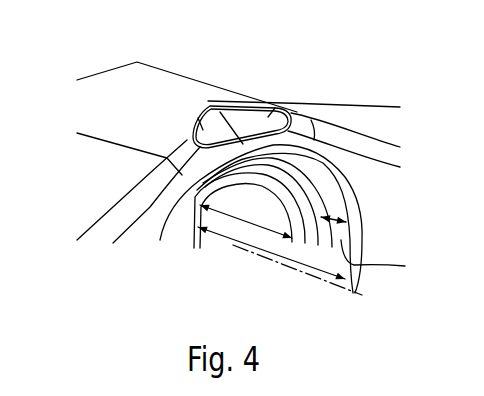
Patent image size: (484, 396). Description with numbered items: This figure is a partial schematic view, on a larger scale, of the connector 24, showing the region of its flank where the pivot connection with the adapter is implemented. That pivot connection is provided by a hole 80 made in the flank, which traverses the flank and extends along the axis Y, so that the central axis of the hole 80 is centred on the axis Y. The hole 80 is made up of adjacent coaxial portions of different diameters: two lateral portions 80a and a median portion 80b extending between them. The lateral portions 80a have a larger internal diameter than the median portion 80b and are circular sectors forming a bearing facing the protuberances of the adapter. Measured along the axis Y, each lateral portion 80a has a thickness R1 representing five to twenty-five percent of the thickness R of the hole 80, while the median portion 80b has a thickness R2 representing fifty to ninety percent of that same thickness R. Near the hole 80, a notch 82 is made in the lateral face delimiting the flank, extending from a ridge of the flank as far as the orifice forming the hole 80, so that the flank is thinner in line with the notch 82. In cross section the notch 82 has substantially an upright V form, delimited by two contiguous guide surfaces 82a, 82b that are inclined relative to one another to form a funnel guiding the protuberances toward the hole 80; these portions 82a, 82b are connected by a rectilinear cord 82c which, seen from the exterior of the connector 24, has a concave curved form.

The connector 24 is at (358, 77).
The notch 82 is at (254, 91).
The guide surface 82a is at (268, 117).
The guide surface 82b is at (198, 118).
The rectilinear cord 82c is at (232, 122).
The hole 80 is at (165, 250).
The lateral portion 80a is at (186, 243).
The median portion 80b is at (216, 240).
The thickness of the hole R is at (233, 245).
The thickness of the lateral portion R1 is at (347, 215).
The thickness of the median portion R2 is at (261, 232).
The axis Y is at (320, 287).